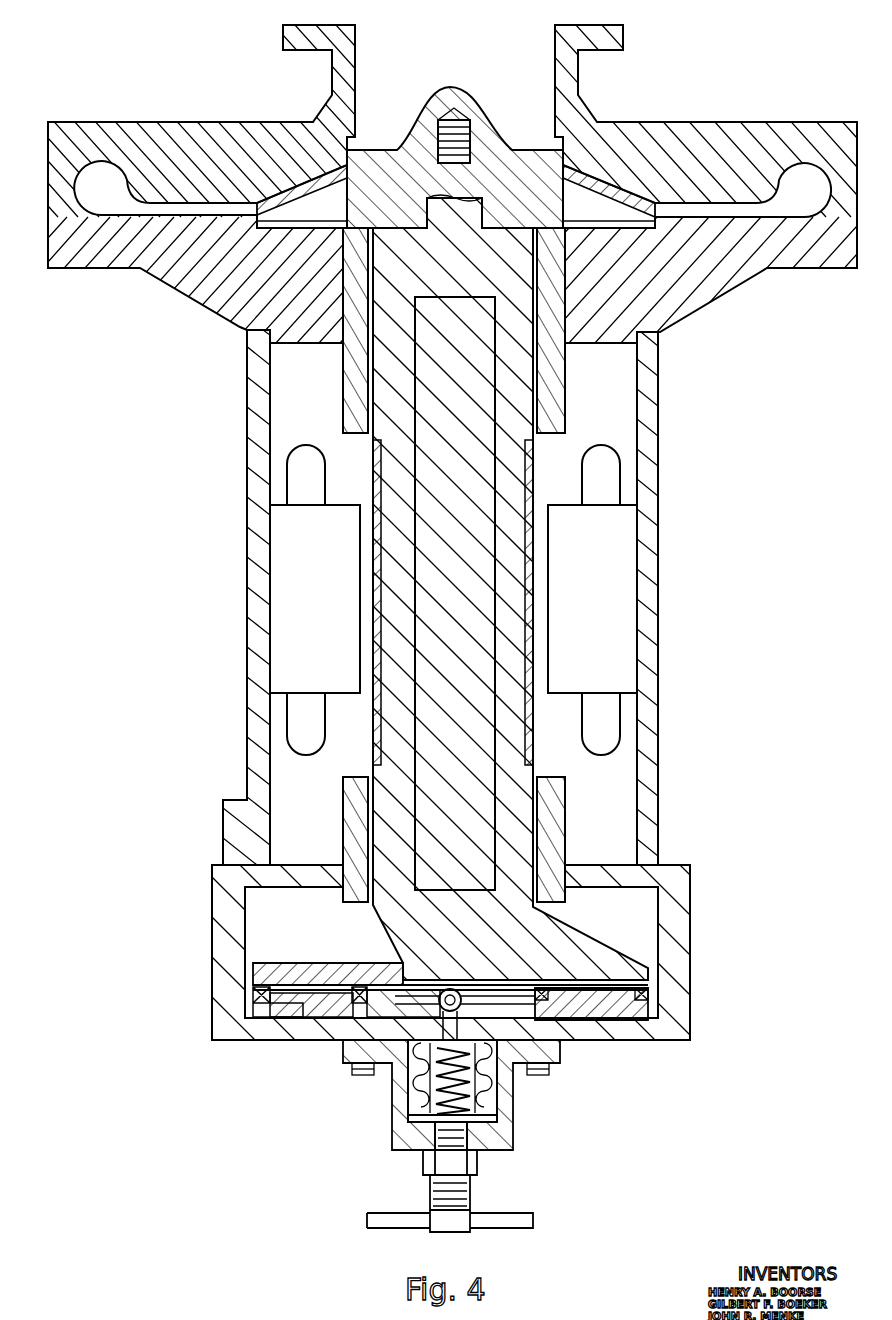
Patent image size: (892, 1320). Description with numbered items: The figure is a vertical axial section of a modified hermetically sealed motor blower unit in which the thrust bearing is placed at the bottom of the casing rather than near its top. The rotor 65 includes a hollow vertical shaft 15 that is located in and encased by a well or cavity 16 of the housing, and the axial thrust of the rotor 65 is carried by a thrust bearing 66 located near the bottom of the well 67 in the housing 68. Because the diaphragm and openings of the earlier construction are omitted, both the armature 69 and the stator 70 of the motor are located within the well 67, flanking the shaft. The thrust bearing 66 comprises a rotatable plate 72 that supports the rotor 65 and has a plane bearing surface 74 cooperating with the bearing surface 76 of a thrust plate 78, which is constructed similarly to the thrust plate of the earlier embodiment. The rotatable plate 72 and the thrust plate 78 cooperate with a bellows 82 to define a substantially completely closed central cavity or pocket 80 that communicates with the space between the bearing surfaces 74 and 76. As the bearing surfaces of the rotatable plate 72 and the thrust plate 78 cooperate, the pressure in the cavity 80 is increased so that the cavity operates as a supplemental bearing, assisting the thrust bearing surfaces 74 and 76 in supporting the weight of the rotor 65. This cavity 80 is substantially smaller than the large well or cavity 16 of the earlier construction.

The hollow vertical shaft 15 is at (512, 735).
The well or cavity 16 is at (555, 845).
The rotor 65 is at (440, 203).
The thrust bearing 66 is at (283, 958).
The well 67 is at (635, 401).
The housing 68 is at (725, 285).
The armature 69 is at (533, 507).
The stator 70 is at (625, 637).
The rotatable plate 72 is at (550, 935).
The plane bearing surface 74 is at (617, 980).
The bearing surface 76 is at (617, 990).
The thrust plate 78 is at (580, 1013).
The central cavity or pocket 80 is at (387, 993).
The bellows 82 is at (405, 1090).